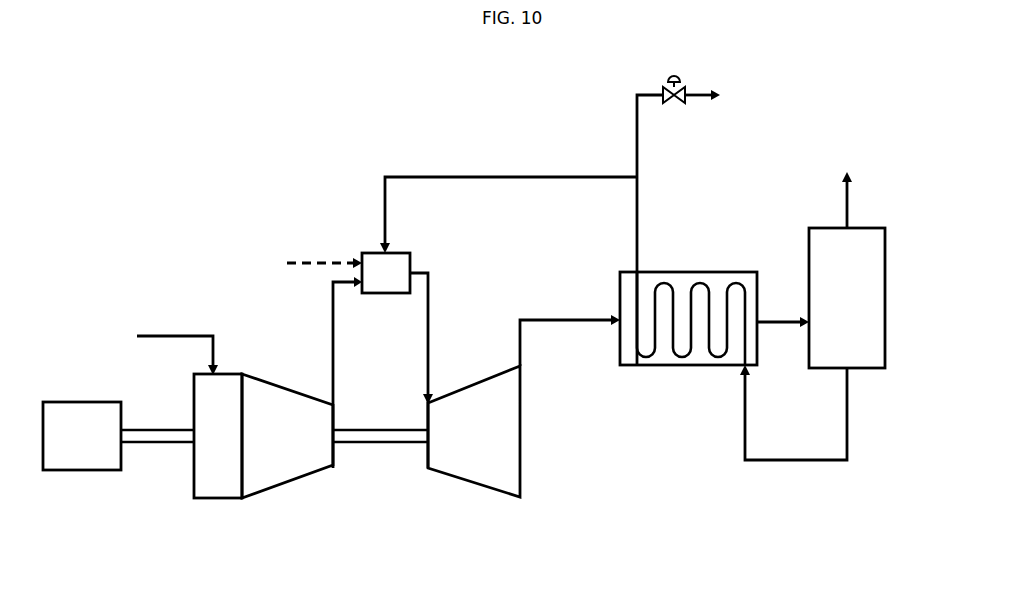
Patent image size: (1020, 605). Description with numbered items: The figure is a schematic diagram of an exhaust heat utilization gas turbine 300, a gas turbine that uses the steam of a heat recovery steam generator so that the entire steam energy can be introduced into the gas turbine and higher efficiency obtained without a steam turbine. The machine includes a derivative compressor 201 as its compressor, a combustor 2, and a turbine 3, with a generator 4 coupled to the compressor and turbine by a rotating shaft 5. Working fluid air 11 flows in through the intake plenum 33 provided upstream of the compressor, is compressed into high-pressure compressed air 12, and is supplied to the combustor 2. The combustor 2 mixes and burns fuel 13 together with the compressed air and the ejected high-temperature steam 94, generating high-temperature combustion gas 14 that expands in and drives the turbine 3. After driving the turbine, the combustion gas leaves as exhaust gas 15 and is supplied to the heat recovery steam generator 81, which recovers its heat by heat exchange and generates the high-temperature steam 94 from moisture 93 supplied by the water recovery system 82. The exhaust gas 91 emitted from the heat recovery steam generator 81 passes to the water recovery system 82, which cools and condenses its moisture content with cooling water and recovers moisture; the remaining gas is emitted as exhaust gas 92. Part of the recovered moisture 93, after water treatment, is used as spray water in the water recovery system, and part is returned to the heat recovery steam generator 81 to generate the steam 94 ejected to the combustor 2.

The exhaust heat utilization gas turbine 300 is at (306, 126).
The combustor 2 is at (412, 262).
The turbine 3 is at (468, 483).
The generator 4 is at (90, 403).
The rotating shaft 5 is at (379, 443).
The working fluid (air) 11 is at (178, 335).
The high-pressure compressed air 12 is at (333, 367).
The fuel 13 is at (335, 262).
The high-temperature combustion gas 14 is at (430, 372).
The exhaust gas 15 is at (583, 320).
The intake plenum 33 is at (223, 498).
The derivative compressor 201 is at (277, 488).
The heat recovery steam generator 81 is at (720, 272).
The water recovery system 82 is at (885, 303).
The exhaust gas 91 is at (793, 320).
The exhaust gas 92 is at (852, 212).
The moisture 93 is at (780, 460).
The high-temperature steam 94 is at (527, 177).